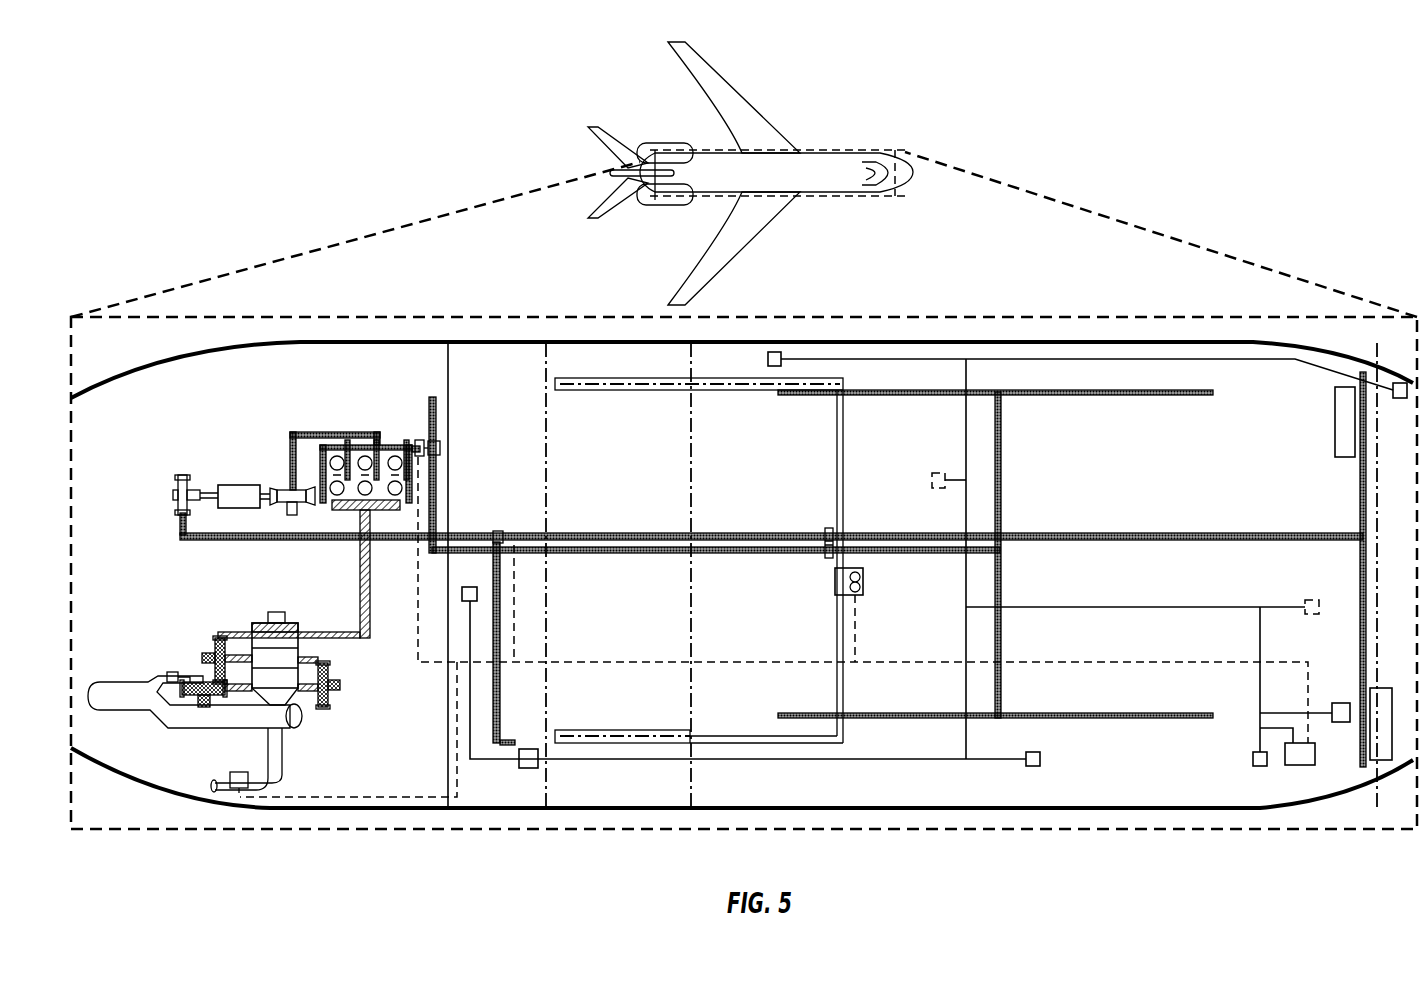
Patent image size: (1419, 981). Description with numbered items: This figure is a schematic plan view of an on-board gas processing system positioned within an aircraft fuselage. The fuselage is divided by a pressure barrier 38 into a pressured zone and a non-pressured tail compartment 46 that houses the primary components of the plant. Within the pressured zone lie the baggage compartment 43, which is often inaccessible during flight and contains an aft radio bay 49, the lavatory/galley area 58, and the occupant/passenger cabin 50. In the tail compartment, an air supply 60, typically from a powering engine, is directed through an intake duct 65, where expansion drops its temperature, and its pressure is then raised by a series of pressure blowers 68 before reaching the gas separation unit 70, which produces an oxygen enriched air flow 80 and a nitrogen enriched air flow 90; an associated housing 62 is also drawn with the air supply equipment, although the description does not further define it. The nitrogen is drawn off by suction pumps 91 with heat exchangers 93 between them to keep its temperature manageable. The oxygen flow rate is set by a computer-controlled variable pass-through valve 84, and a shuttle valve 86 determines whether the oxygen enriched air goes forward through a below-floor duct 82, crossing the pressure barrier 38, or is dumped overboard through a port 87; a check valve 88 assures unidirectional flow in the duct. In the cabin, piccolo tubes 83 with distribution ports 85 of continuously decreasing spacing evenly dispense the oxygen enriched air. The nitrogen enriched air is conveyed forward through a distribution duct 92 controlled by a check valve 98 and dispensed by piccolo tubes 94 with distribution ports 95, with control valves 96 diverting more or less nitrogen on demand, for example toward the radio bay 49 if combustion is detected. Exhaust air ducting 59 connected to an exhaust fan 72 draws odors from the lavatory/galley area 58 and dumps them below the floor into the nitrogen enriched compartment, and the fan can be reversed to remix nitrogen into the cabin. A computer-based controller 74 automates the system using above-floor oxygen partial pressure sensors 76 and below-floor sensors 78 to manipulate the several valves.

The pressure barrier 38 is at (448, 362).
The baggage compartment 43 is at (533, 433).
The tail compartment 46 is at (133, 428).
The radio bay 49 is at (1342, 420).
The passenger cabin 50 is at (773, 468).
The lavatory/galley area 58 is at (628, 468).
The exhaust air ducting 59 is at (618, 385).
The air supply 60 is at (238, 651).
The APU housing 62 is at (291, 620).
The intake duct 65 is at (153, 725).
The pressure blowers 68 is at (197, 688).
The gas separation unit 70 is at (393, 441).
The exhaust fan 72 is at (866, 580).
The computer-based controller 74 is at (1300, 765).
The above-floor oxygen partial pressure sensor 76 is at (779, 352).
The below-floor oxygen partial pressure sensor 78 is at (930, 482).
The oxygen enriched air 80 is at (441, 478).
The duct 82 is at (434, 530).
The piccolo tube 83 is at (935, 395).
The variable pass-through valve 84 is at (422, 442).
The distribution ports 85 is at (1075, 395).
The shuttle valve 86 is at (441, 447).
The port 87 is at (434, 398).
The check valve 88 is at (824, 558).
The nitrogen enriched air 90 is at (232, 541).
The suction pumps 91 is at (176, 495).
The distribution duct 92 is at (615, 535).
The heat exchangers 93 is at (238, 487).
The piccolo tube 94 is at (1360, 465).
The distribution ports 95 is at (1366, 405).
The control valve 96 is at (502, 531).
The check valve 98 is at (824, 530).